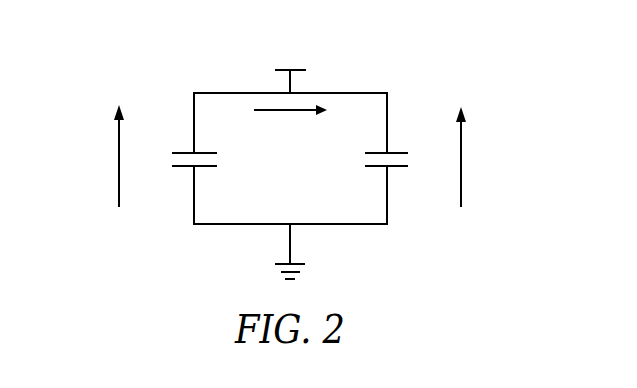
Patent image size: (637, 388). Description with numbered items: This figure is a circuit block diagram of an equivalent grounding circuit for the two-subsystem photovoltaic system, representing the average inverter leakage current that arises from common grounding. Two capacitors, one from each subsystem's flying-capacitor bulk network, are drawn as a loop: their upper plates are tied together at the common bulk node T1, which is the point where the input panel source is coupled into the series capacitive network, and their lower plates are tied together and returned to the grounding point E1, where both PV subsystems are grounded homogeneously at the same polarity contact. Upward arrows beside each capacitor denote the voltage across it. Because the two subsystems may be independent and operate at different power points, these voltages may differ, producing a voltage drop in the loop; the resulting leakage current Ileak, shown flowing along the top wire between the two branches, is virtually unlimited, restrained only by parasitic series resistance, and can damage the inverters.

The common bulk node T1 is at (259, 72).
The grounding point E1 is at (276, 259).
The leakage current Ileak is at (290, 123).